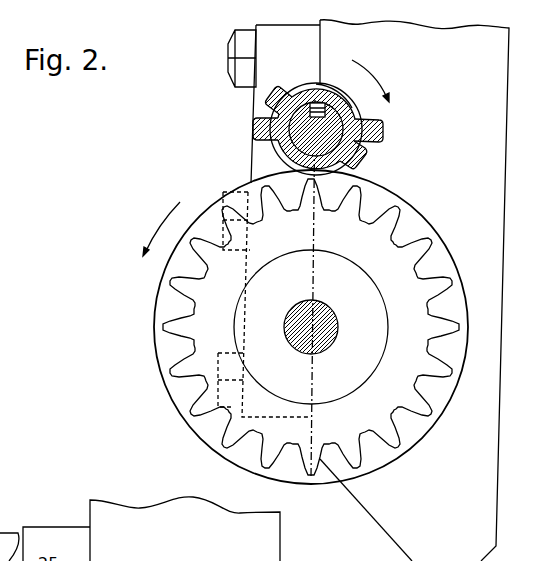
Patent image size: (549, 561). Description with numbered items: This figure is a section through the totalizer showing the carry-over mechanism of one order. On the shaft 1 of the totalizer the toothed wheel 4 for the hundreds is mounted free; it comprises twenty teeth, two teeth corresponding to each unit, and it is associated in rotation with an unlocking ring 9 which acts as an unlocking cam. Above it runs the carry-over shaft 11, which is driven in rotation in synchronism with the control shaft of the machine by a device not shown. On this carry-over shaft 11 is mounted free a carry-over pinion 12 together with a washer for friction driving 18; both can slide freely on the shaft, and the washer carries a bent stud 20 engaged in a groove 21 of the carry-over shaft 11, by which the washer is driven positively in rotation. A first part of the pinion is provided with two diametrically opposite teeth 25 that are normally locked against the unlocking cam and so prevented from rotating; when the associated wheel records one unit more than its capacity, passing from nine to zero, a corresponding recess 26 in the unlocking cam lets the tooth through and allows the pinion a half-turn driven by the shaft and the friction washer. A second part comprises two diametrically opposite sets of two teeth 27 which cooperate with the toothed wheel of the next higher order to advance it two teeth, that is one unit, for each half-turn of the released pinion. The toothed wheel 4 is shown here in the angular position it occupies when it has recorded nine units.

The shaft 1 is at (334, 320).
The toothed wheel for the hundreds 4 is at (311, 319).
The unlocking ring 9 is at (441, 246).
The carry-over shaft 11 is at (296, 146).
The carry-over pinion 12 is at (343, 104).
The washer for friction driving 18 is at (355, 117).
The bent stud 20 is at (332, 92).
The groove 21 is at (315, 102).
The teeth 25 is at (274, 93).
The recess 26 is at (401, 200).
The sets of two teeth 27 is at (256, 116).